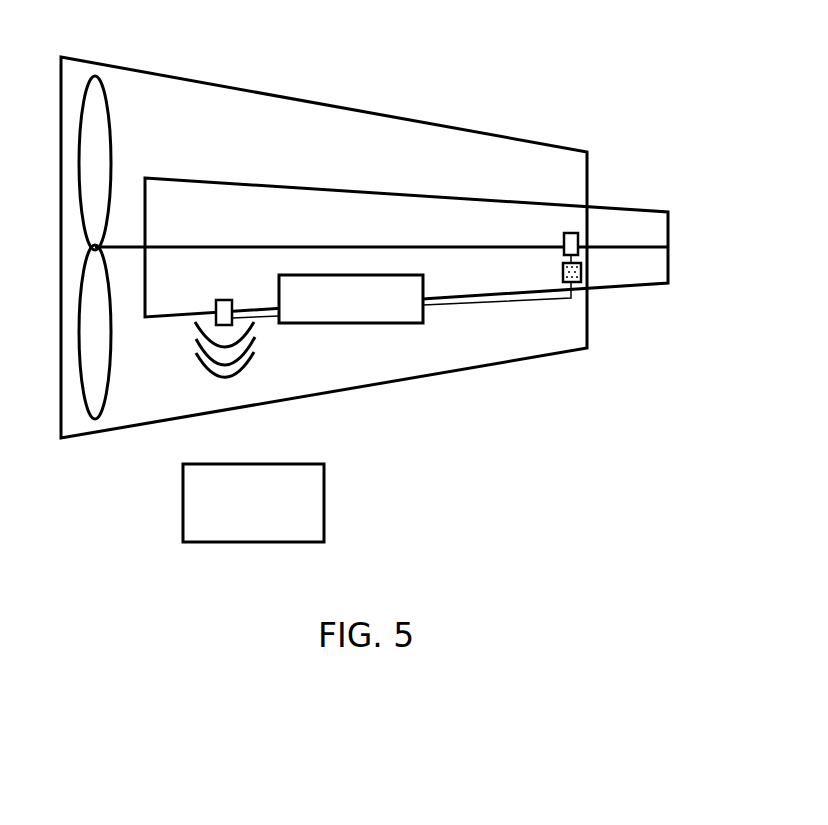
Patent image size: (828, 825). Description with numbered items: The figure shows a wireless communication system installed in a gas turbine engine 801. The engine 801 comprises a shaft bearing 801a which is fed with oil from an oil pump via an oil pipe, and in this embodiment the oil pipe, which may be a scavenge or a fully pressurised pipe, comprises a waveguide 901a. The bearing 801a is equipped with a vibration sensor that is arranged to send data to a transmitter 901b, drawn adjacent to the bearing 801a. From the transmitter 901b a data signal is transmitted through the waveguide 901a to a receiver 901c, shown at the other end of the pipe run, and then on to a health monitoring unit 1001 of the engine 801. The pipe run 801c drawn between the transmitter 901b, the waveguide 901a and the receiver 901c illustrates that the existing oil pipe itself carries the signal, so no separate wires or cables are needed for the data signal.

The gas turbine engine 801 is at (402, 77).
The shaft bearing 801a is at (580, 238).
The transmitter 901b is at (583, 270).
The cable / signal wire 801c is at (463, 307).
The waveguide 901a is at (351, 299).
The receiver 901c is at (213, 323).
The health monitoring unit 1001 is at (253, 503).